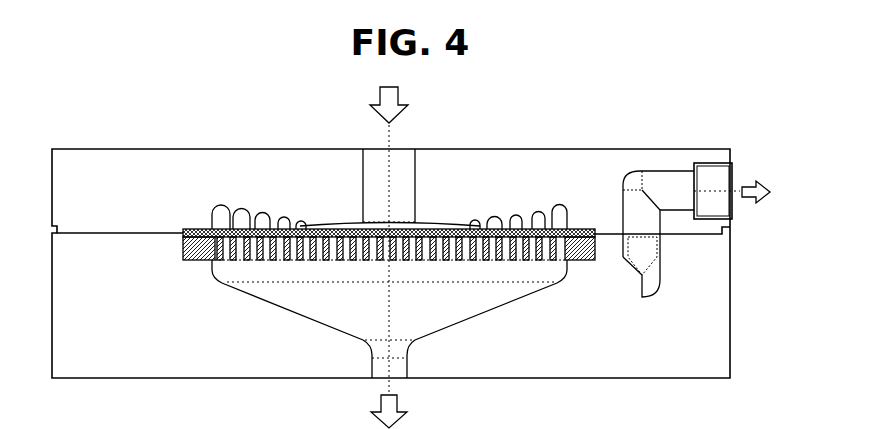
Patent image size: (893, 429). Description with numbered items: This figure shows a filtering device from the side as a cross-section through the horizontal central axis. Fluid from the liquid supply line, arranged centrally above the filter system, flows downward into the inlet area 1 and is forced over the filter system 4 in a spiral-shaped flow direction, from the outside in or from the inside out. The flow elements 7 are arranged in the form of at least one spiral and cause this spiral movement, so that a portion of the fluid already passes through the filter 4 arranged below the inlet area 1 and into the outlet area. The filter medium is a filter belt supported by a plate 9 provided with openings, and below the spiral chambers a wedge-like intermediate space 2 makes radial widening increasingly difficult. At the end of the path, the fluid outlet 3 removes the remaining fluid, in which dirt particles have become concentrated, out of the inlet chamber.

The inlet area 1 is at (389, 186).
The discharge funnel 2 is at (389, 319).
The fluid outlet 3 is at (681, 230).
The filter system 4 is at (211, 226).
The flow elements 7 is at (222, 207).
The plate 9 is at (190, 253).